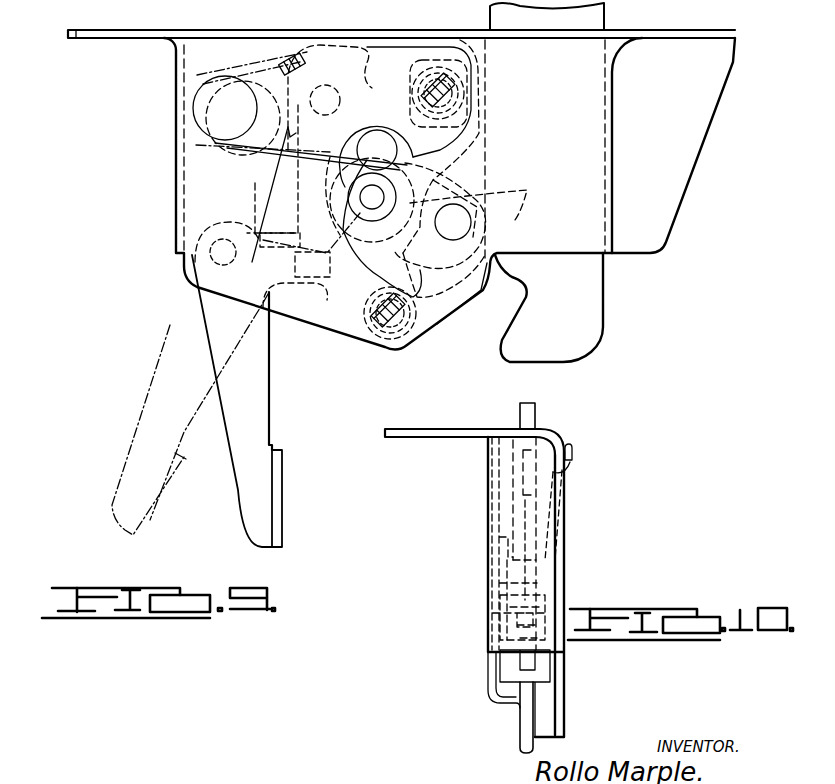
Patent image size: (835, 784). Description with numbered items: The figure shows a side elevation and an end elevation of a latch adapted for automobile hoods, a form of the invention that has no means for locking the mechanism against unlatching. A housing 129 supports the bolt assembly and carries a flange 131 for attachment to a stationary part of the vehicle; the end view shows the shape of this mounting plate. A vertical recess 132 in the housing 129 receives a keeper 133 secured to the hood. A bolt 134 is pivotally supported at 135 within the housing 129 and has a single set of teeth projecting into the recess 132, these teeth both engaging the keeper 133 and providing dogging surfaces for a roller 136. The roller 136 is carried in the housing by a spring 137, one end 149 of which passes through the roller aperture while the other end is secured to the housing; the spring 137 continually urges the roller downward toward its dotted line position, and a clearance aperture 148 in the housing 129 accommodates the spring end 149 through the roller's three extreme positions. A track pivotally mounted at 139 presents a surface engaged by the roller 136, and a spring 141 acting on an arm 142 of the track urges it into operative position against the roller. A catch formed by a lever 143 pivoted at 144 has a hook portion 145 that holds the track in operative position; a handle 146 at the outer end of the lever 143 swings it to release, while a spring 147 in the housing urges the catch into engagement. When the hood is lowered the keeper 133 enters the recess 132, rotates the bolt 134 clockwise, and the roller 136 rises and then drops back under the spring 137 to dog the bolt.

In FIG. 9, the housing 129 is at (188, 198).
In FIG. 10, the housing 129 is at (565, 523).
In FIG. 9, the flange 131 is at (80, 33).
In FIG. 10, the flange 131 is at (418, 433).
In FIG. 9, the vertical recess 132 is at (606, 86).
In FIG. 9, the keeper 133 is at (545, 130).
In FIG. 10, the keeper 133 is at (533, 411).
In FIG. 9, the bolt 134 is at (507, 273).
In FIG. 9, the pivot 135 is at (466, 236).
In FIG. 9, the roller 136 is at (331, 271).
In FIG. 10, the roller 136 is at (570, 607).
In FIG. 9, the spring 137 is at (256, 185).
In FIG. 10, the spring 137 is at (570, 461).
In FIG. 9, the pivot 139 is at (326, 88).
In FIG. 9, the spring 141 is at (450, 50).
In FIG. 9, the arm 142 is at (387, 53).
In FIG. 9, the lever 143 is at (262, 424).
In FIG. 10, the lever 143 is at (521, 748).
In FIG. 9, the pivot 144 is at (190, 263).
In FIG. 9, the hook portion 145 is at (271, 320).
In FIG. 9, the handle 146 is at (281, 490).
In FIG. 9, the spring 147 is at (392, 350).
In FIG. 9, the clearance aperture 148 is at (390, 247).
In FIG. 9, the end of spring 149 is at (410, 203).
In FIG. 10, the end of spring 149 is at (493, 609).